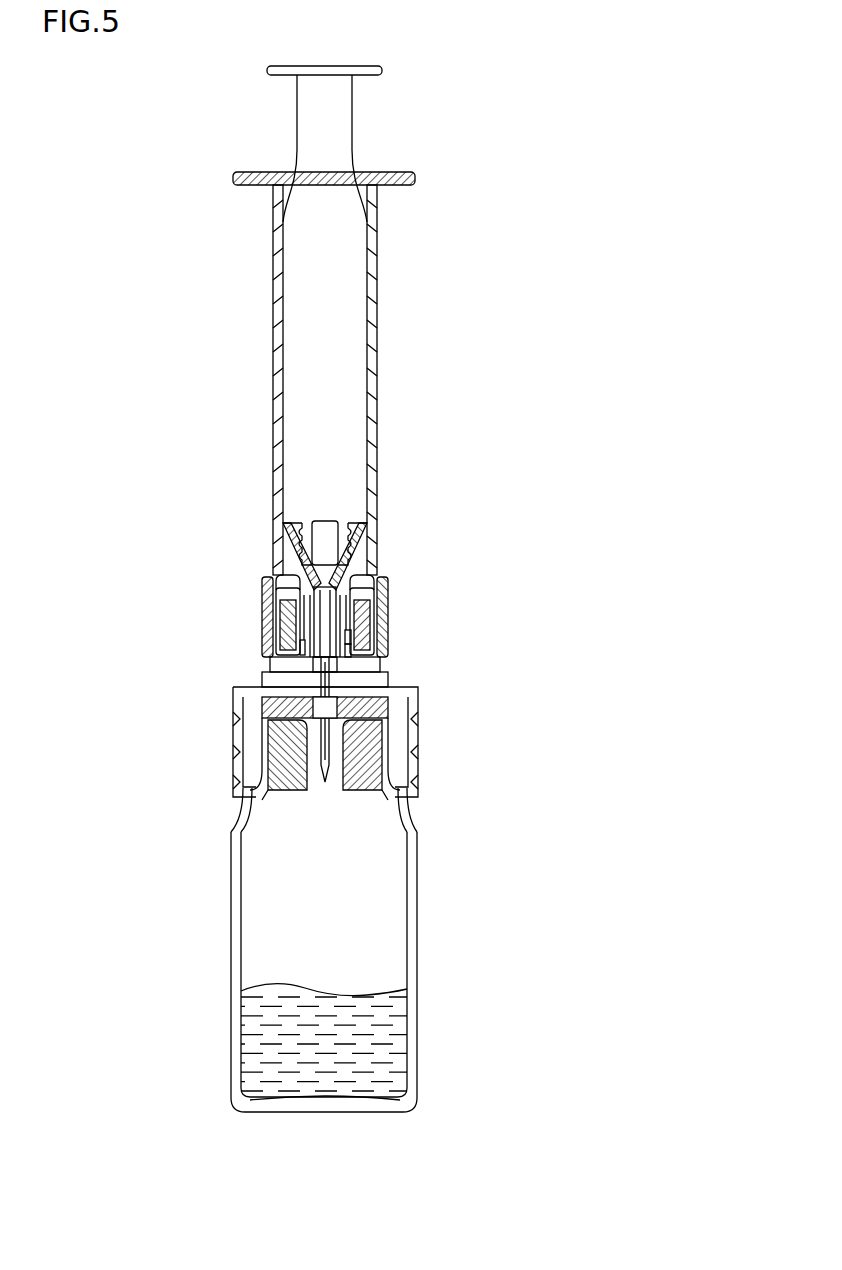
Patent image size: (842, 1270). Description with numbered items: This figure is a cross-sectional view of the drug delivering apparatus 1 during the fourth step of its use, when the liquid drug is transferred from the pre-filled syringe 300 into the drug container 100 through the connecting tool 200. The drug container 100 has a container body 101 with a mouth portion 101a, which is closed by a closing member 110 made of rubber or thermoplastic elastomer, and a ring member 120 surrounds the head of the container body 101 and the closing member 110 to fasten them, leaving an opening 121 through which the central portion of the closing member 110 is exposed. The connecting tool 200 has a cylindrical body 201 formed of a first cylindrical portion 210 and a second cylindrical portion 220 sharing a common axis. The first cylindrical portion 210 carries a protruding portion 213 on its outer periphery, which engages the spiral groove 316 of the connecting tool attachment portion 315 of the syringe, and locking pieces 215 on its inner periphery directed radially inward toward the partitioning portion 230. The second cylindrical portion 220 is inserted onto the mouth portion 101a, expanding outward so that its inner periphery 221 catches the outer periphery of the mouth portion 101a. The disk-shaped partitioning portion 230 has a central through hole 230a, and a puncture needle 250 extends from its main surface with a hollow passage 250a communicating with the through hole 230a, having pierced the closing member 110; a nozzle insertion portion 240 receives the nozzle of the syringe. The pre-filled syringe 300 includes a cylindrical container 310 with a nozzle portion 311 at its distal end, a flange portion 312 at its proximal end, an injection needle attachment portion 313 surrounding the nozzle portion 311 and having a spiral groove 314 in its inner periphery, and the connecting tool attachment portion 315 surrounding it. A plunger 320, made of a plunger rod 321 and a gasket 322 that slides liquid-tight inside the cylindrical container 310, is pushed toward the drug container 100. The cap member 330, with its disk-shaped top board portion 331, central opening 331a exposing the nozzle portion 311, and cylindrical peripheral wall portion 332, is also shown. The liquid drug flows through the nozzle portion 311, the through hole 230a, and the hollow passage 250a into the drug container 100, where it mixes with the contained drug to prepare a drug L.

The drug delivering apparatus 1 is at (457, 44).
The drug container 100 is at (183, 892).
The container body 101 is at (233, 958).
The mouth portion 101a is at (381, 735).
The closing member 110 is at (290, 765).
The ring member 120 is at (244, 740).
The opening 121 is at (243, 727).
The connecting tool 200 is at (445, 848).
The cylindrical body 201 is at (109, 680).
The first cylindrical portion 210 is at (268, 678).
The protruding portion 213 is at (372, 612).
The locking pieces 215 is at (364, 576).
The second cylindrical portion 220 is at (262, 700).
The inner periphery 221 is at (398, 795).
The partitioning portion 230 is at (376, 683).
The through hole 230a is at (346, 665).
The nozzle insertion portion 240 is at (320, 659).
The puncture needle 250 is at (362, 706).
The hollow passage 250a is at (341, 722).
The pre-filled syringe 300 is at (419, 285).
The cylindrical container 310 is at (378, 420).
The nozzle portion 311 is at (278, 625).
The flange portion 312 is at (402, 181).
The injection needle attachment portion 313 is at (270, 580).
The spiral groove 314 is at (275, 595).
The connecting tool attachment portion 315 is at (378, 625).
The spiral groove 316 is at (384, 592).
The plunger 320 is at (392, 128).
The plunger rod 321 is at (350, 345).
The gasket 322 is at (355, 532).
The cap member 330 is at (486, 603).
The top board portion 331 is at (355, 653).
The opening 331a is at (298, 648).
The peripheral wall portion 332 is at (368, 645).
The drug L is at (395, 1050).